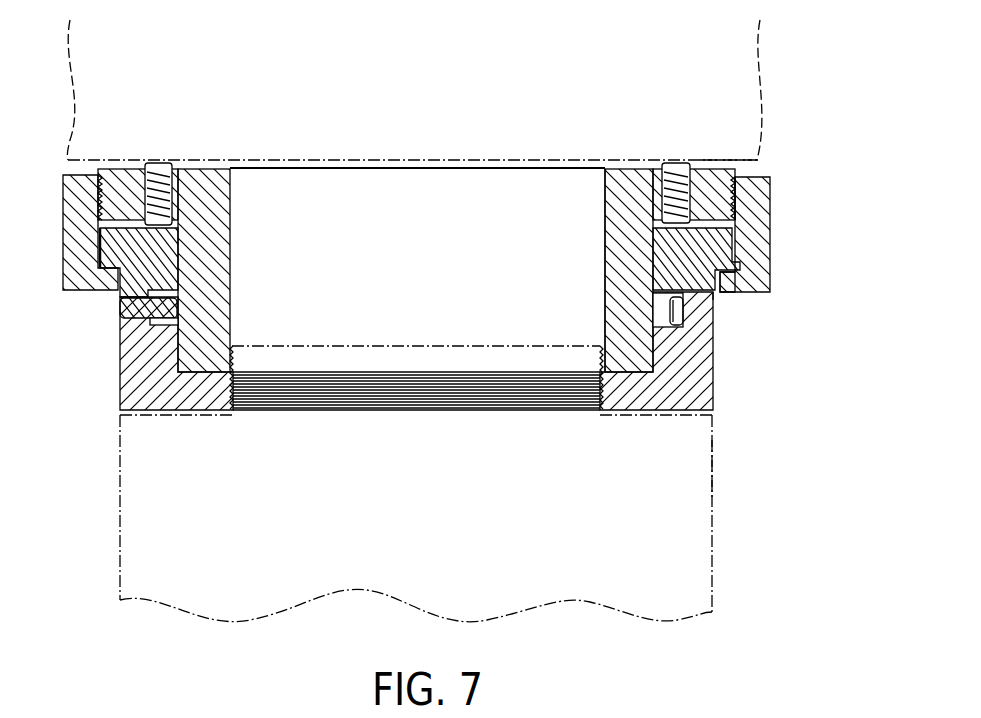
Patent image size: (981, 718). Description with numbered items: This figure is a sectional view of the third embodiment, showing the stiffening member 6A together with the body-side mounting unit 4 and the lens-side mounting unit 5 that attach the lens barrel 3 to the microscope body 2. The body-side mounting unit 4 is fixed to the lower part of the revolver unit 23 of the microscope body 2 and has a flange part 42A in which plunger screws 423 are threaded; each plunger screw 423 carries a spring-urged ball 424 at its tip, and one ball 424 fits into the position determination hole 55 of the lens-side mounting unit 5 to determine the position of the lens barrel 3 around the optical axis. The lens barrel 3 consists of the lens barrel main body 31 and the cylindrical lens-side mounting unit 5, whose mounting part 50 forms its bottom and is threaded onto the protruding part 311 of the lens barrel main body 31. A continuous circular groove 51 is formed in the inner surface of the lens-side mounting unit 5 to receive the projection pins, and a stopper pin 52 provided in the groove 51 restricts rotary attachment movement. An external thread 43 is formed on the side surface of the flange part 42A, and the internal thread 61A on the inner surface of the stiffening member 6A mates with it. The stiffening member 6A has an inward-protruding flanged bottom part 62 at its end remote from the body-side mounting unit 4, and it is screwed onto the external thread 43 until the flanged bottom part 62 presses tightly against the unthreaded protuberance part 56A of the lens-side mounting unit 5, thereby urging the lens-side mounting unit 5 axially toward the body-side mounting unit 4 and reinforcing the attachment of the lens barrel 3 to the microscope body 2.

The microscope body 2 is at (762, 33).
The revolver unit 23 is at (757, 70).
The lens barrel 3 is at (757, 444).
The lens barrel main body 31 is at (714, 470).
The protruding part 311 is at (505, 345).
The body-side mounting unit 4 is at (705, 167).
The flange part 42A is at (720, 168).
The plunger screw 423 is at (160, 164).
The ball 424 is at (150, 232).
The external thread 43 is at (742, 185).
The lens-side mounting unit 5 is at (714, 378).
The mounting part 50 is at (633, 408).
The groove 51 is at (675, 327).
The stopper pin 52 is at (165, 314).
The position determination hole 55 is at (653, 237).
The protuberance part 56A is at (735, 293).
The stiffening member 6A is at (771, 192).
The internal thread 61A is at (738, 205).
The flanged bottom part 62 is at (737, 277).